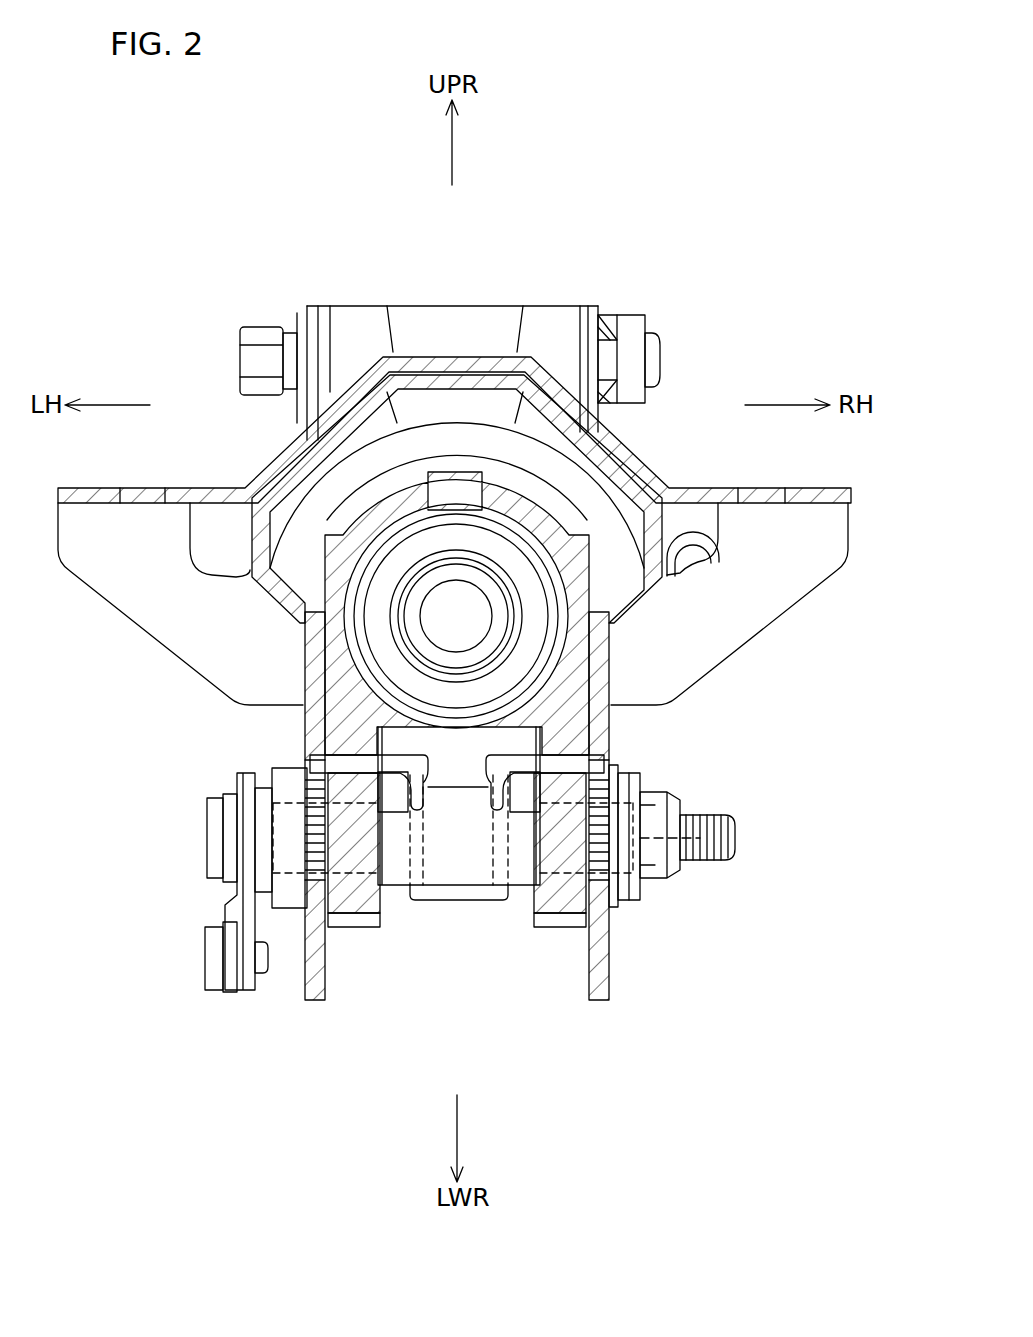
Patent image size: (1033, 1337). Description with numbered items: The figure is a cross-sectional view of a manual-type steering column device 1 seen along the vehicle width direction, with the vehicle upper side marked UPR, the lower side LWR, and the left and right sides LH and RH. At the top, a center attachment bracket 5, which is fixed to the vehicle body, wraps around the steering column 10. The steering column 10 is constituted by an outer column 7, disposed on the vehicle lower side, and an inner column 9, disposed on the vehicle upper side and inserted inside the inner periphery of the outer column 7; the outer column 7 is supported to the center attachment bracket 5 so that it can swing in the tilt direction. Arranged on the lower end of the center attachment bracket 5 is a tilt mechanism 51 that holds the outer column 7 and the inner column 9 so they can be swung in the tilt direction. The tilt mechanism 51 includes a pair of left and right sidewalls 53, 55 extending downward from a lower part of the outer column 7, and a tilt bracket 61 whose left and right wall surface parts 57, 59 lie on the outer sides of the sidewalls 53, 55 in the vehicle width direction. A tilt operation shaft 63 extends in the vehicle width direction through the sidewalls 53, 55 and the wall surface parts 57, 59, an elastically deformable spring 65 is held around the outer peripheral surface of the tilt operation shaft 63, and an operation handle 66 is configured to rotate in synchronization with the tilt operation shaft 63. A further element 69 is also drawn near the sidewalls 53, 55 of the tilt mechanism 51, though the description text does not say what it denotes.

The steering column device 1 is at (601, 228).
The center attachment bracket 5 is at (688, 493).
The outer column 7 is at (318, 530).
The inner column 9 is at (551, 694).
The steering column 10 is at (431, 569).
The tilt mechanism 51 is at (624, 958).
The left sidewall 53 is at (358, 907).
The right sidewall 55 is at (572, 907).
The left wall surface part 57 is at (318, 996).
The right wall surface part 59 is at (600, 996).
The tilt bracket 61 is at (295, 642).
The tilt operation shaft 63 is at (700, 826).
The spring 65 is at (463, 917).
The operation handle 66 is at (252, 990).
The clip 69 is at (310, 763).